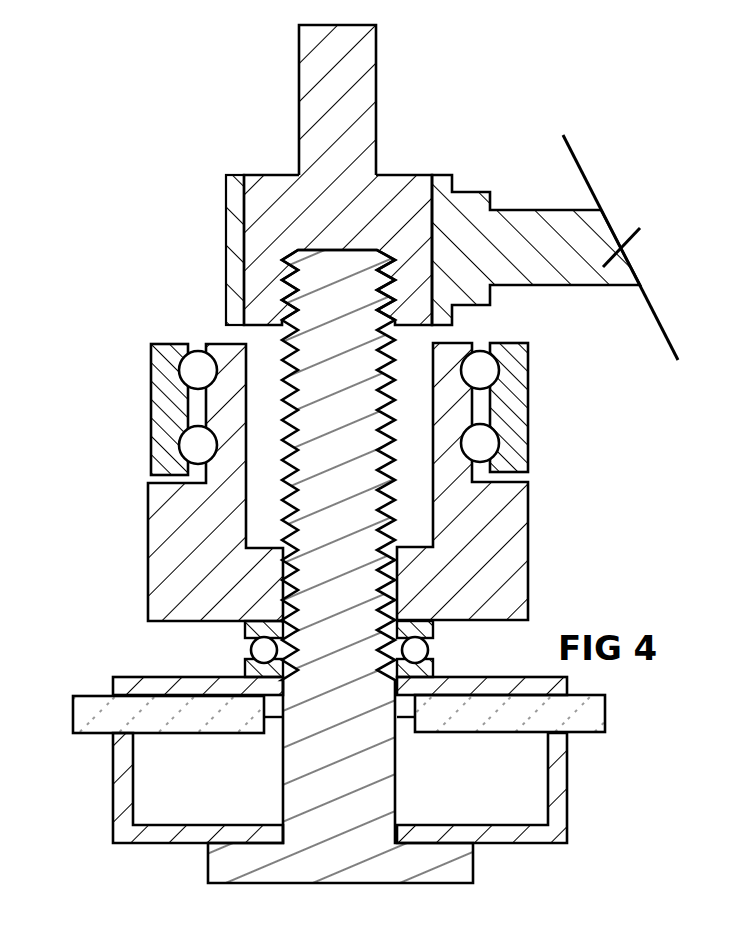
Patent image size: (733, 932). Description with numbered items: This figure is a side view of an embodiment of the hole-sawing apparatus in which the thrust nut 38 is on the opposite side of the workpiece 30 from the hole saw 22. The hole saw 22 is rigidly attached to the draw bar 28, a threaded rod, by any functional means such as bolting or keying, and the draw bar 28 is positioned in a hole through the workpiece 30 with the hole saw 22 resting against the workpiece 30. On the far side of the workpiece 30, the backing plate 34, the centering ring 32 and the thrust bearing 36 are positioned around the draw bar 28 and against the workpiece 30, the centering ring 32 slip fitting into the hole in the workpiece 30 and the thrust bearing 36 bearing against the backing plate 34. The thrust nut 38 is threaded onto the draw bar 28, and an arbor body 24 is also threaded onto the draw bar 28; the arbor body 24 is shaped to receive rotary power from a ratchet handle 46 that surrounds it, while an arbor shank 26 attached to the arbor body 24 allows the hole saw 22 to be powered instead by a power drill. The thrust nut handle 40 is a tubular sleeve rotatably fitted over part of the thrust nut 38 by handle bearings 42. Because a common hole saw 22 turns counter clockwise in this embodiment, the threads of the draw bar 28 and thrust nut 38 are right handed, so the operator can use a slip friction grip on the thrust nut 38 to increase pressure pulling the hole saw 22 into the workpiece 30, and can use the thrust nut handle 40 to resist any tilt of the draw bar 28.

The hole saw 22 is at (124, 837).
The arbor body 24 is at (297, 172).
The arbor shank 26 is at (338, 43).
The draw bar 28 is at (287, 350).
The workpiece 30 is at (105, 745).
The centering ring 32 is at (407, 717).
The backing plate 34 is at (500, 685).
The thrust bearing 36 is at (245, 633).
The thrust nut 38 is at (187, 548).
The thrust nut handle 40 is at (516, 415).
The handle bearings 42 is at (198, 370).
The ratchet handle 46 is at (470, 228).